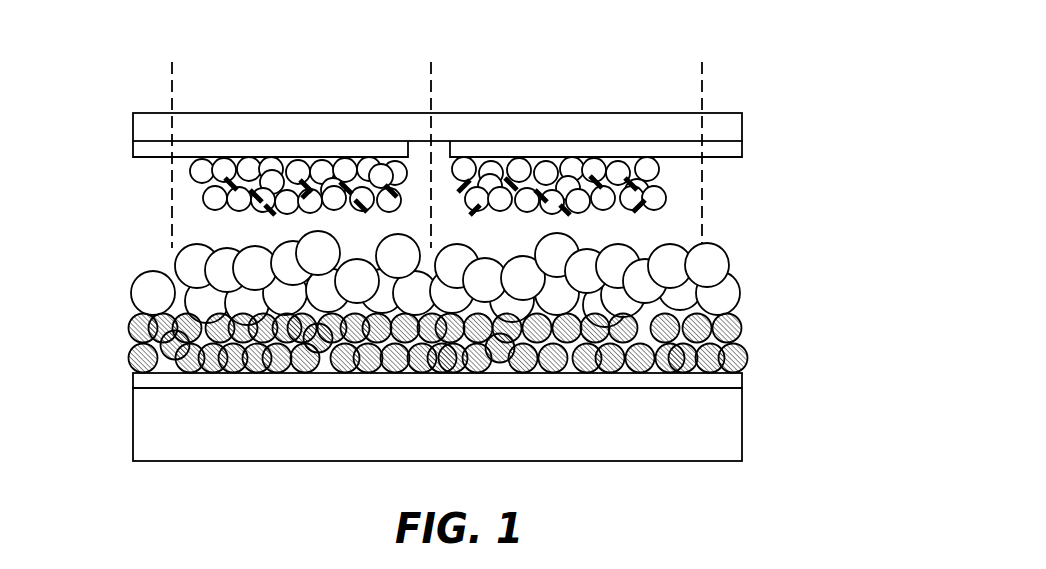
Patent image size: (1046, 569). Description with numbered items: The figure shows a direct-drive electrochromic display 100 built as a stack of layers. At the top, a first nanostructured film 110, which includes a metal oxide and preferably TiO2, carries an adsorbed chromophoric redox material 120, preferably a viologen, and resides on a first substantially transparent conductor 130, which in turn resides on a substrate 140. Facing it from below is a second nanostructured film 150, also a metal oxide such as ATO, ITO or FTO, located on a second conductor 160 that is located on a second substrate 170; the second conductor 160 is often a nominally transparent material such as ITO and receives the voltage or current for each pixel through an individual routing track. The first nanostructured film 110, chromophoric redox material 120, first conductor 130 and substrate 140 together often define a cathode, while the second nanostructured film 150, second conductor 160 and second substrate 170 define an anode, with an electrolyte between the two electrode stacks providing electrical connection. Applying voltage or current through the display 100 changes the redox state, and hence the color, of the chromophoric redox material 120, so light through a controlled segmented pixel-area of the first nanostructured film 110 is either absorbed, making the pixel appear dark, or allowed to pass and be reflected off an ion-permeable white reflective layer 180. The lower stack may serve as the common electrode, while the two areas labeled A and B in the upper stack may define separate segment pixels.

The direct-drive electrochromic display 100 is at (826, 31).
The first nanostructured film 110 is at (522, 208).
The chromophoric redox material 120 is at (648, 208).
The first substantially transparent conductor 130 is at (133, 152).
The substrate 140 is at (133, 125).
The second nanostructured film 150 is at (745, 331).
The second conductor 160 is at (733, 382).
The second substrate 170 is at (733, 449).
The ion-permeable white reflective layer 180 is at (745, 292).